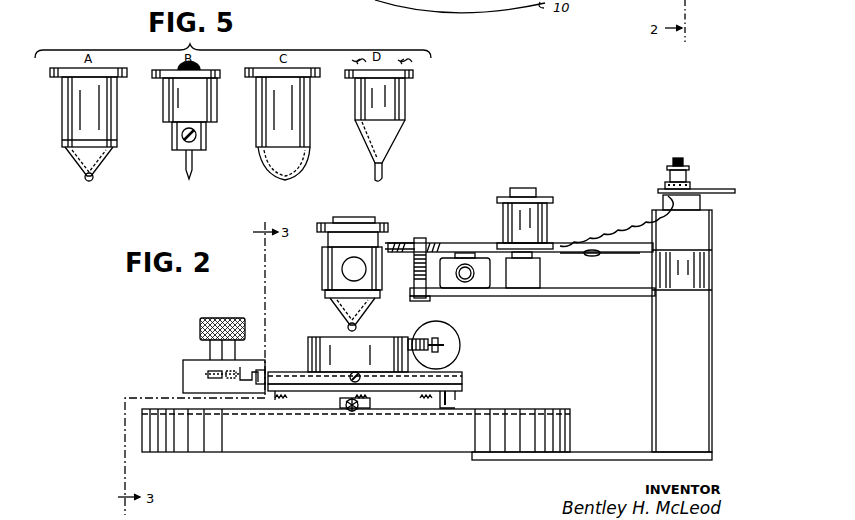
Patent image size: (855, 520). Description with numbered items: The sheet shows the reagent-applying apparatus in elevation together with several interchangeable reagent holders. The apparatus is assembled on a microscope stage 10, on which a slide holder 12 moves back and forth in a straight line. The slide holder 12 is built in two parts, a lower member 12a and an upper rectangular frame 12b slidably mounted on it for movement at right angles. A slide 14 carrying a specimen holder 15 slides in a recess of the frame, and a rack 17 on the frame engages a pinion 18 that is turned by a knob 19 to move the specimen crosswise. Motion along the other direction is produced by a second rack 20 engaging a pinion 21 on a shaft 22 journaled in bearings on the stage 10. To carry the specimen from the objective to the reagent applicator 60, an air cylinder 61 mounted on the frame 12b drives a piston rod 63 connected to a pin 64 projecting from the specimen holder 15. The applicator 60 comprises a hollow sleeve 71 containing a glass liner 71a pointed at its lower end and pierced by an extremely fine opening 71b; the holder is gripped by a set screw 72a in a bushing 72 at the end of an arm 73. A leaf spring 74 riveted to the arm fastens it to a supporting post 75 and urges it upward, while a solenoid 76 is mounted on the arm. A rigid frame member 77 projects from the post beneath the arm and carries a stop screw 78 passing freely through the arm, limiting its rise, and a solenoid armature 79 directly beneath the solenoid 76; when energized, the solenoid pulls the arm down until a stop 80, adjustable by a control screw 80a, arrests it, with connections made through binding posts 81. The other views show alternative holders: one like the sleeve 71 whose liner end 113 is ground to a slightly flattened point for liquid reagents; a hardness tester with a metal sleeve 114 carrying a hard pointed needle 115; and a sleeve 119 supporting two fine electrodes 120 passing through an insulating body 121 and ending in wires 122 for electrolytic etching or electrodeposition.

In FIG. 2, the microscope stage 10 is at (226, 450).
In FIG. 2, the slide holder 12 is at (460, 398).
In FIG. 2, the lower member of slide holder 12a is at (446, 404).
In FIG. 2, the upper rectangular frame 12b is at (462, 380).
In FIG. 2, the slide 14 is at (300, 380).
In FIG. 2, the specimen holder 15 is at (308, 348).
In FIG. 2, the rack 17 is at (243, 366).
In FIG. 2, the pinion 18 is at (205, 375).
In FIG. 2, the knob 19 is at (200, 326).
In FIG. 2, the second rack 20 is at (428, 400).
In FIG. 2, the pinion 21 is at (353, 413).
In FIG. 2, the shaft 22 is at (343, 407).
In FIG. 2, the reagent applicator 60 is at (320, 273).
In FIG. 2, the air cylinder 61 is at (460, 345).
In FIG. 2, the piston rod 63 is at (445, 340).
In FIG. 2, the pin 64 is at (412, 338).
In FIG. 5, the sleeve or holder 71 is at (66, 112).
In FIG. 2, the sleeve or holder 71 is at (335, 296).
In FIG. 5, the glass liner 71a is at (78, 160).
In FIG. 2, the glass liner 71a is at (366, 305).
In FIG. 5, the fine opening 71b is at (97, 180).
In FIG. 2, the fine opening 71b is at (348, 326).
In FIG. 2, the bushing 72 is at (325, 262).
In FIG. 2, the set screw 72a is at (350, 270).
In FIG. 2, the arm 73 is at (450, 243).
In FIG. 2, the leaf spring 74 is at (620, 251).
In FIG. 2, the supporting post 75 is at (712, 266).
In FIG. 2, the solenoid 76 is at (548, 212).
In FIG. 2, the rigid frame member 77 is at (592, 296).
In FIG. 2, the stop screw 78 is at (414, 270).
In FIG. 2, the solenoid armature 79 is at (541, 272).
In FIG. 2, the stop 80 is at (465, 256).
In FIG. 2, the control screw 80a is at (472, 281).
In FIG. 2, the binding posts 81 is at (690, 164).
In FIG. 5, the extreme lower end 113 is at (284, 180).
In FIG. 5, the metal sleeve or holder 114 is at (170, 108).
In FIG. 5, the hard pointed needle 115 is at (185, 164).
In FIG. 5, the holder or sleeve 119 is at (405, 118).
In FIG. 5, the electrodes 120 is at (378, 180).
In FIG. 5, the insulating body 121 is at (392, 143).
In FIG. 5, the wires 122 is at (402, 60).